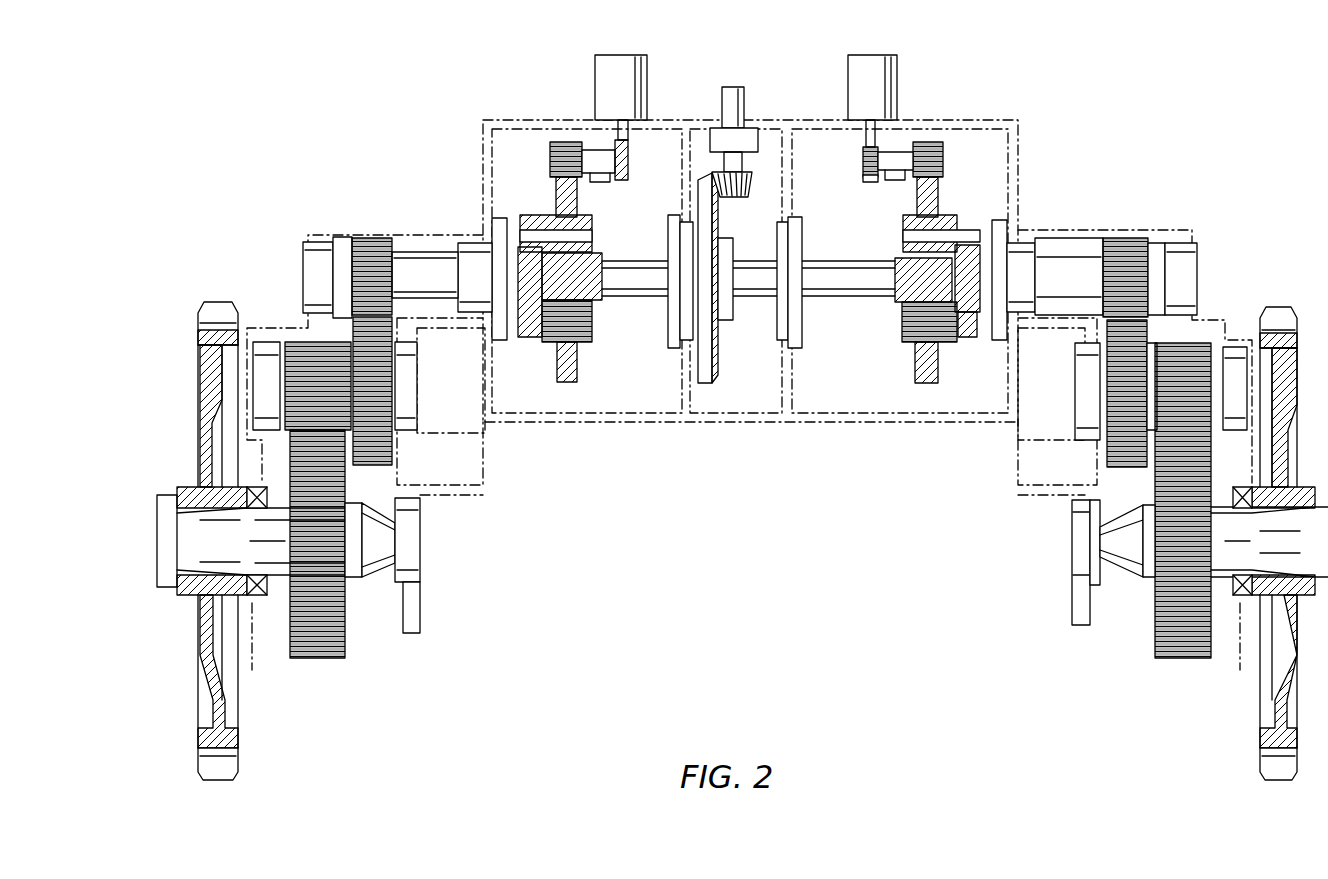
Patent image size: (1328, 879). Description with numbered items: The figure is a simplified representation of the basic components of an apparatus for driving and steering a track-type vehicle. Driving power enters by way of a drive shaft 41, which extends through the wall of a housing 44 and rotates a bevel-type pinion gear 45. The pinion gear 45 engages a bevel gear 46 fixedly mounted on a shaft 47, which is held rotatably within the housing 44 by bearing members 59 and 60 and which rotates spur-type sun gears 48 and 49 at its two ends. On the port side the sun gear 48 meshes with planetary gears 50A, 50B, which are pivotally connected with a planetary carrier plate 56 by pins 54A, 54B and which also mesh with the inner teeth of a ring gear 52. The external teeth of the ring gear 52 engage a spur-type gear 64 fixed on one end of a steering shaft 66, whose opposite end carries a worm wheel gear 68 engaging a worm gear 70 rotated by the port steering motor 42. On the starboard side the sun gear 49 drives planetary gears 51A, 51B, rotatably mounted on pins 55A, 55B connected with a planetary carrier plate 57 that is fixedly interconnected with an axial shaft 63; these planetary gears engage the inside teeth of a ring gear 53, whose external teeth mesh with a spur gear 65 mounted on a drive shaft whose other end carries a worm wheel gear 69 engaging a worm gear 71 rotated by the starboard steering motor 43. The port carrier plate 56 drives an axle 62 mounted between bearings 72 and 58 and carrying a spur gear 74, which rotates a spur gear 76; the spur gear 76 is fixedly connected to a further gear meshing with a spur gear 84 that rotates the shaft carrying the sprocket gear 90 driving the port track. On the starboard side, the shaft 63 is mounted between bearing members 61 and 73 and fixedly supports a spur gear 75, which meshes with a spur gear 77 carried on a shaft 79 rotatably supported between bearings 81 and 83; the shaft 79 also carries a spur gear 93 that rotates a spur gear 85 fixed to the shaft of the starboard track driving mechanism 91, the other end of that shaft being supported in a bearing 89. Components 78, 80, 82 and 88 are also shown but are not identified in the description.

The drive shaft 41 is at (737, 95).
The port steering motor 42 is at (627, 62).
The starboard steering motor 43 is at (872, 62).
The housing 44 is at (1010, 122).
The bevel-type pinion gear 45 is at (749, 198).
The bevel gear 46 is at (712, 385).
The shaft 47 is at (840, 298).
The sun gear 48 is at (598, 305).
The sun gear 49 is at (900, 302).
The planetary gear 50A is at (590, 345).
The planetary gear 50B is at (590, 225).
The planetary gear 51A is at (905, 218).
The planetary gear 51B is at (912, 342).
The ring gear 52 is at (565, 385).
The ring gear 53 is at (928, 385).
The pin 54A is at (532, 336).
The pin 54B is at (592, 237).
The pin 55A is at (965, 337).
The pin 55B is at (903, 237).
The planetary carrier plate 56 is at (530, 217).
The planetary carrier plate 57 is at (998, 222).
The bearing 58 is at (490, 228).
The bearing member 59 is at (672, 348).
The bearing member 60 is at (780, 345).
The bearing member 61 is at (1010, 240).
The axle 62 is at (420, 252).
The axial shaft 63 is at (1080, 255).
The spur-type gear 64 is at (568, 142).
The spur gear 65 is at (930, 142).
The steering shaft 66 is at (598, 158).
The worm wheel gear 68 is at (628, 168).
The worm wheel gear 69 is at (862, 178).
The worm gear 70 is at (628, 150).
The worm gear 71 is at (868, 155).
The bearing 72 is at (303, 255).
The bearing member 73 is at (1197, 255).
The spur gear 74 is at (365, 240).
The spur gear 75 is at (1135, 247).
The spur gear 76 is at (385, 450).
The spur gear 77 is at (1107, 455).
The left bearing collar 78 is at (392, 393).
The shaft 79 is at (1107, 393).
The left spacer collar 80 is at (417, 355).
The bearing 81 is at (1075, 360).
The left wheel 82 is at (260, 328).
The bearing 83 is at (1265, 320).
The spur gear 84 is at (328, 660).
The spur gear 85 is at (1183, 660).
The left axle bracket 88 is at (421, 540).
The bearing 89 is at (1072, 542).
The sprocket gear 90 is at (238, 770).
The starboard track driving mechanism 91 is at (1260, 765).
The spur gear 93 is at (1200, 347).